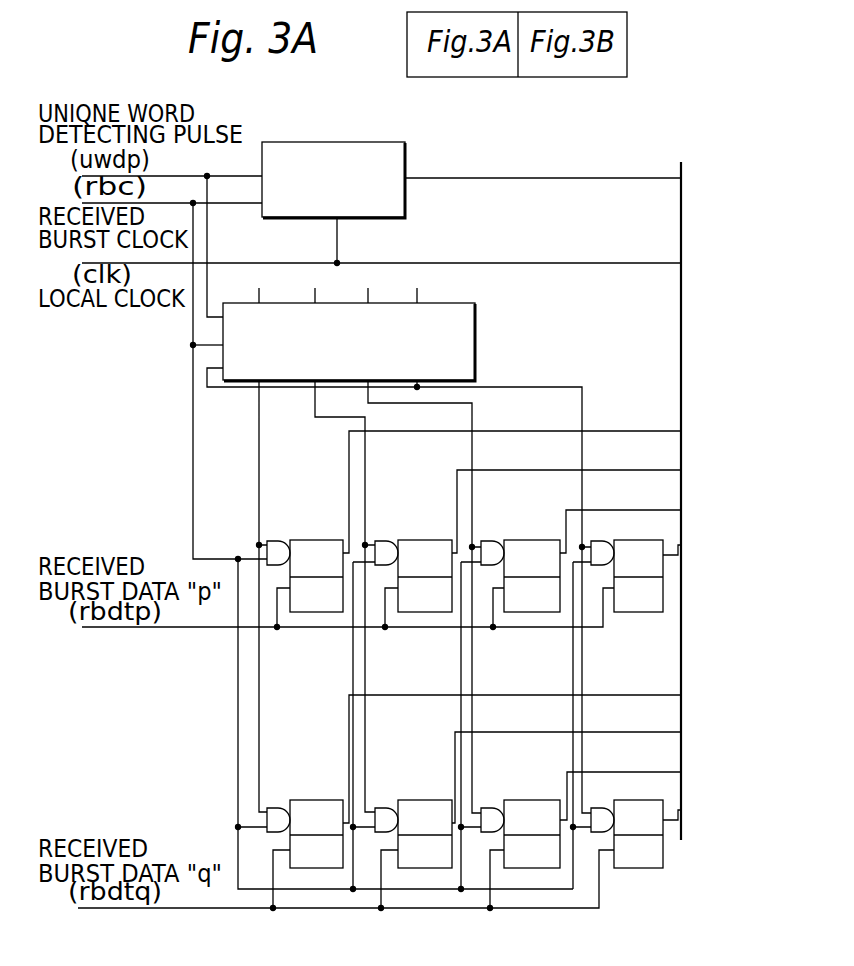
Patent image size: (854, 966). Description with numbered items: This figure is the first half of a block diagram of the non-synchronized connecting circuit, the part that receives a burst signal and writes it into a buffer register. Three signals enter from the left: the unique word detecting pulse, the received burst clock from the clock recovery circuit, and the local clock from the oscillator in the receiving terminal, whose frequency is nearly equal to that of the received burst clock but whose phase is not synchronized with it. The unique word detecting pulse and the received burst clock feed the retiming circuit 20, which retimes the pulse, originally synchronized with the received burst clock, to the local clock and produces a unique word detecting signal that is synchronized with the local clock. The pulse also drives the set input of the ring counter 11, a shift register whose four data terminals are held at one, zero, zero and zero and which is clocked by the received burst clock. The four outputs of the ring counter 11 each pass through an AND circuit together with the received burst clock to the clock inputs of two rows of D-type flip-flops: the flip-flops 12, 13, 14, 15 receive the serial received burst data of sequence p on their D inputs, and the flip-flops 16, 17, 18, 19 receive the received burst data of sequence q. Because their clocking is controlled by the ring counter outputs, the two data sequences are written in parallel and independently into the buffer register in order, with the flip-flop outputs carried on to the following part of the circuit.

The retiming circuit 20 is at (405, 148).
The ring counter 11 is at (475, 344).
The flip-flop 12 is at (312, 540).
The flip-flop 13 is at (421, 540).
The flip-flop 14 is at (528, 540).
The flip-flop 15 is at (637, 540).
The flip-flop 16 is at (312, 800).
The flip-flop 17 is at (421, 800).
The flip-flop 18 is at (528, 800).
The flip-flop 19 is at (637, 800).